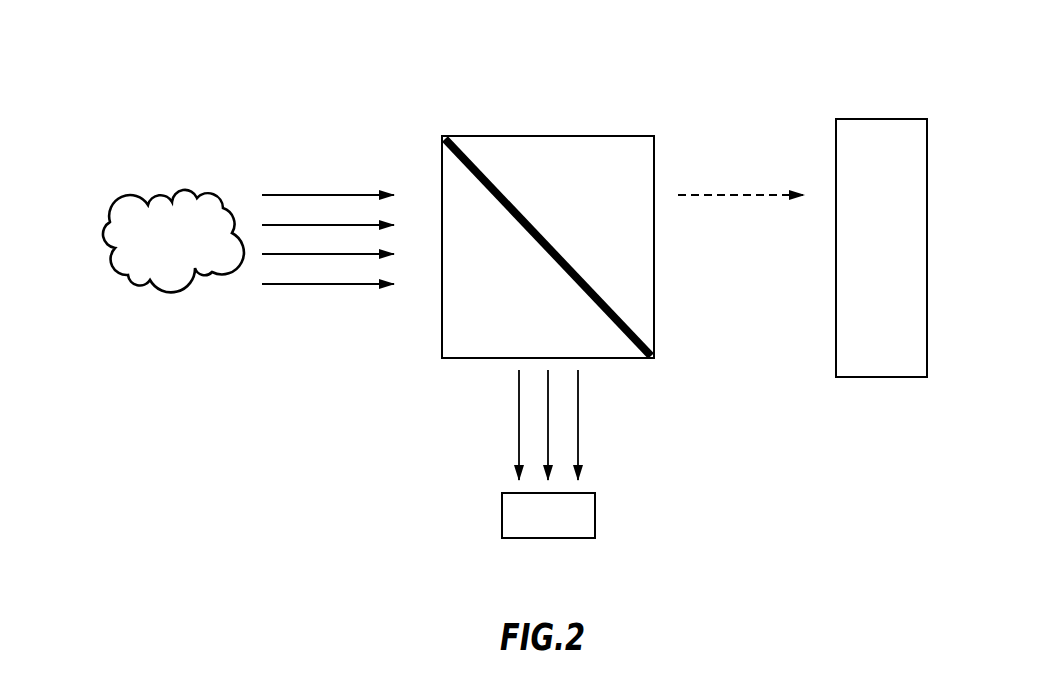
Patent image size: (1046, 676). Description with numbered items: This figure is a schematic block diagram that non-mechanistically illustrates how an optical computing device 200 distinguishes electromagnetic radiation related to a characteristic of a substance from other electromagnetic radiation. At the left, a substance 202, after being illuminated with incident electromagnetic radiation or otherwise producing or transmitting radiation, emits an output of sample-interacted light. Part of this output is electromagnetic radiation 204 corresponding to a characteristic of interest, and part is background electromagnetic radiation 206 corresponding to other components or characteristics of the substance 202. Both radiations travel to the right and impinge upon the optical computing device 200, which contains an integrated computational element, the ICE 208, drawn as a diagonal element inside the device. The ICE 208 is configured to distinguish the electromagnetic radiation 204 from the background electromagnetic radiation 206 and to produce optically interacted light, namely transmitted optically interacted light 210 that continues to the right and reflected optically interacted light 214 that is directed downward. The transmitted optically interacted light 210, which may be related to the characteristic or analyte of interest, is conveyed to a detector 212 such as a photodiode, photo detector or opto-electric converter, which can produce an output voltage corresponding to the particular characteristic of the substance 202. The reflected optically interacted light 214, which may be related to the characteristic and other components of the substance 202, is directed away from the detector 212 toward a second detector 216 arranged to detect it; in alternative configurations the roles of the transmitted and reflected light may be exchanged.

The optical computing device 200 is at (532, 122).
The substance 202 is at (130, 283).
The electromagnetic radiation 204 is at (337, 193).
The background electromagnetic radiation 206 is at (330, 286).
The ICE 208 is at (530, 220).
The transmitted optically interacted light 210 is at (717, 195).
The detector 212 is at (857, 262).
The reflected optically interacted light 214 is at (578, 437).
The second detector 216 is at (523, 530).